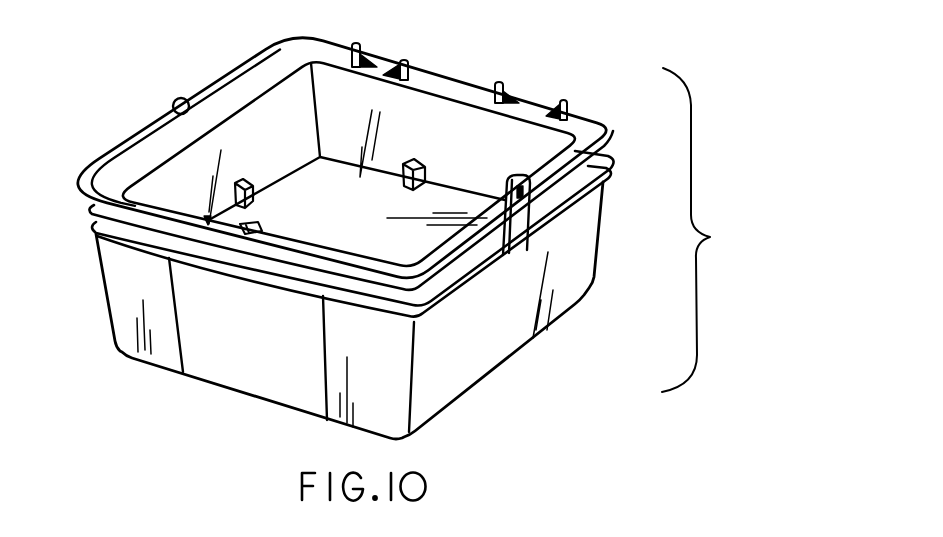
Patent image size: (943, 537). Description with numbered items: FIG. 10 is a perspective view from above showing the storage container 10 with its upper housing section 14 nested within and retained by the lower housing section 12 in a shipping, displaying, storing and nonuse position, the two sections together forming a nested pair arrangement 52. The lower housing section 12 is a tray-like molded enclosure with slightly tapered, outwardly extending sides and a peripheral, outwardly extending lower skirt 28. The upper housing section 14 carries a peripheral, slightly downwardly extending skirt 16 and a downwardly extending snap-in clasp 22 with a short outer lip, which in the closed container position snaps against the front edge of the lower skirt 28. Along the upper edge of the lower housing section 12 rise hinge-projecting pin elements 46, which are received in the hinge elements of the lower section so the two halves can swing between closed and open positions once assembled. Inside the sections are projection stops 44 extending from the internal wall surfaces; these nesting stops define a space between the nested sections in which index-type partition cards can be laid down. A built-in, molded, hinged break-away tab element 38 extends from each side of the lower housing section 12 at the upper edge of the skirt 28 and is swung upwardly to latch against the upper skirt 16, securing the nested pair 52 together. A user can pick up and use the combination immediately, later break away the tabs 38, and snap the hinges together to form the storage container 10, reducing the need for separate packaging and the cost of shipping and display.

The multiple-media storage container 10 is at (72, 106).
The lower housing section 12 is at (463, 358).
The upper housing section 14 is at (453, 148).
The skirt 16 is at (592, 117).
The snap-in clasp 22 is at (260, 227).
The lower skirt 28 is at (458, 273).
The break-away tab element 38 is at (189, 98).
The projection stops 44 is at (257, 199).
The hinge-projecting pin elements 46 is at (400, 62).
The nested pair arrangement 52 is at (707, 230).